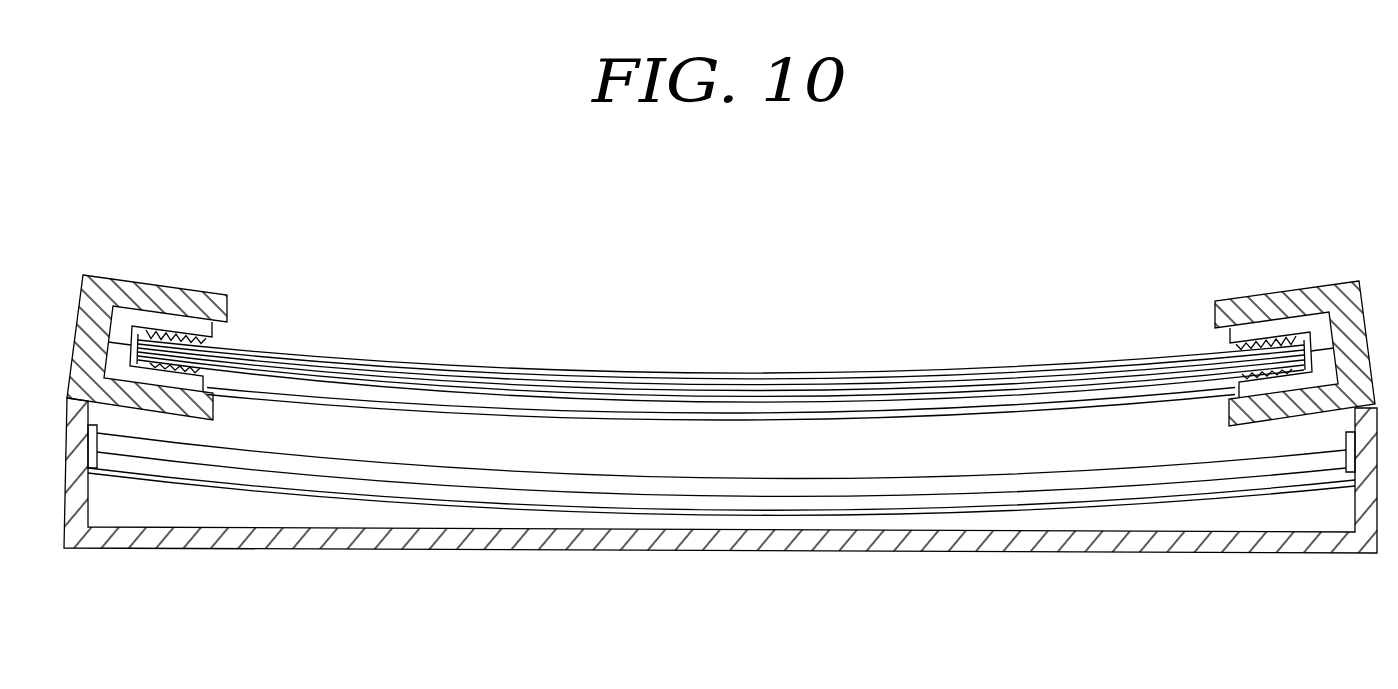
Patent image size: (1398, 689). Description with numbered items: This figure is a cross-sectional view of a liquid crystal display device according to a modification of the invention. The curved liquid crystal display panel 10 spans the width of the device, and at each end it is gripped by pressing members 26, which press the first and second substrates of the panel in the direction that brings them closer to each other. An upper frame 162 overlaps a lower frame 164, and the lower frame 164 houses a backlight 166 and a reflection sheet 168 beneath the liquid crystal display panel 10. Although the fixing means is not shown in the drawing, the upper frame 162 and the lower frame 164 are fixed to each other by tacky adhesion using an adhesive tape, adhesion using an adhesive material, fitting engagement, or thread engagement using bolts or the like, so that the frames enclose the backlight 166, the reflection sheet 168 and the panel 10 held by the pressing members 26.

The liquid crystal display panel 10 is at (772, 362).
The pressing member 26 is at (200, 293).
The upper frame 162 is at (142, 280).
The lower frame 164 is at (560, 553).
The backlight 166 is at (773, 490).
The reflection sheet 168 is at (698, 515).